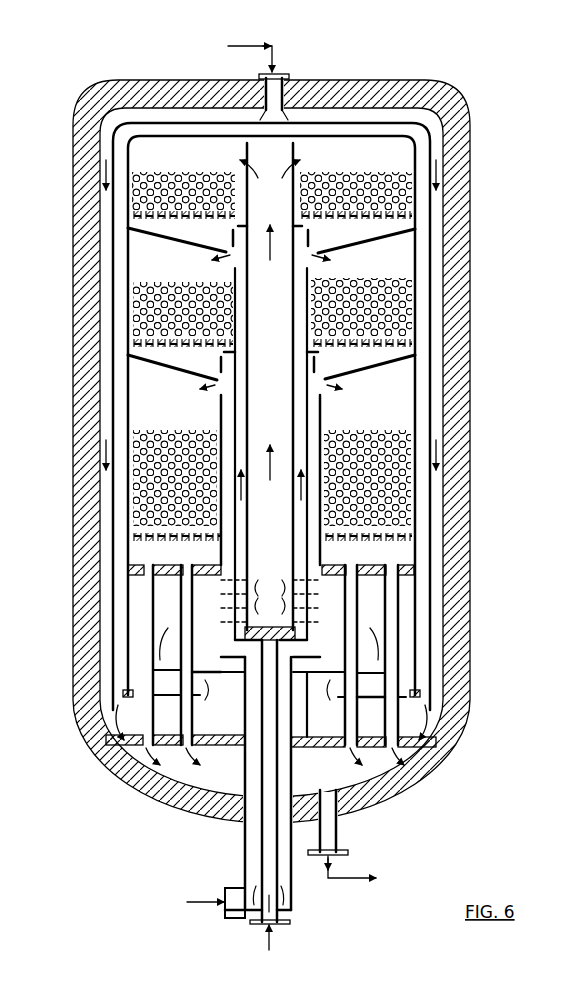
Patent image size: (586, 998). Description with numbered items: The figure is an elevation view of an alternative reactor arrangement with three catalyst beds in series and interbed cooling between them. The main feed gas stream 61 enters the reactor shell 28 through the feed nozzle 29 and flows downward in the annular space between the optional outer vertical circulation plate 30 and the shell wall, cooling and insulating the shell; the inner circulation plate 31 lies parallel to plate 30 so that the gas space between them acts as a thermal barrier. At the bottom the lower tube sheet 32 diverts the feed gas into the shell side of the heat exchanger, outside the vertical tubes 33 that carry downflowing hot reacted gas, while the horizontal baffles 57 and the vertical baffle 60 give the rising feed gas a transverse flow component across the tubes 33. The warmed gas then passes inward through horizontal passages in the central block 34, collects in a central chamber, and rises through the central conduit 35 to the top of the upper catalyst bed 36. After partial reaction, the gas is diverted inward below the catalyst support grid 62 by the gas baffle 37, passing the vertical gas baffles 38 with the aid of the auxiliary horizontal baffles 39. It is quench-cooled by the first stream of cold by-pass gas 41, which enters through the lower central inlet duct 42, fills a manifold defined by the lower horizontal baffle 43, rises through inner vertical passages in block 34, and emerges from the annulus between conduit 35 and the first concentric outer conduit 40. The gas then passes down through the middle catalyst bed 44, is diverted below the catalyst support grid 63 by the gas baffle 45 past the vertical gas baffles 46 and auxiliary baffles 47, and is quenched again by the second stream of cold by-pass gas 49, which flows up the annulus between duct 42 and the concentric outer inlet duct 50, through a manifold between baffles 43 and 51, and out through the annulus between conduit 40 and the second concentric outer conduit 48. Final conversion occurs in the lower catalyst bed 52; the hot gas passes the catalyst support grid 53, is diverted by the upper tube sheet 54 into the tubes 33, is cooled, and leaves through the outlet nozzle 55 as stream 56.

The reactor shell 28 is at (470, 230).
The feed nozzle 29 is at (290, 78).
The outer vertical circulation plate 30 is at (370, 124).
The inner circulation plate 31 is at (128, 272).
The lower tube sheet 32 is at (196, 756).
The vertical tubes 33 is at (269, 655).
The central block 34 is at (248, 572).
The central conduit 35 is at (255, 172).
The upper catalyst bed 36 is at (175, 180).
The gas baffle 37 is at (196, 242).
The vertical gas baffles 38 is at (311, 238).
The auxiliary horizontal baffles 39 is at (232, 238).
The first concentric outer conduit 40 is at (234, 300).
The first stream of cold by-pass gas 41 is at (270, 944).
The lower central inlet duct 42 is at (280, 866).
The lower horizontal baffle 43 is at (306, 657).
The middle catalyst bed 44 is at (158, 292).
The gas baffle 45 is at (166, 366).
The vertical gas baffles 46 is at (218, 364).
The auxiliary baffles 47 is at (318, 362).
The second concentric outer conduit 48 is at (220, 412).
The second stream of cold by-pass gas 49 is at (212, 904).
The concentric outer inlet duct 50 is at (292, 760).
The baffle 51 is at (346, 655).
The lower catalyst bed 52 is at (162, 430).
The catalyst support grid 53 is at (160, 542).
The upper tube sheet 54 is at (168, 566).
The outlet nozzle 55 is at (340, 832).
The outlet stream 56 is at (350, 880).
The horizontal baffles 57 is at (214, 688).
The vertical baffle 60 is at (236, 688).
The main feed gas stream 61 is at (236, 45).
The catalyst support grid 62 is at (222, 216).
The catalyst support grid 63 is at (222, 344).